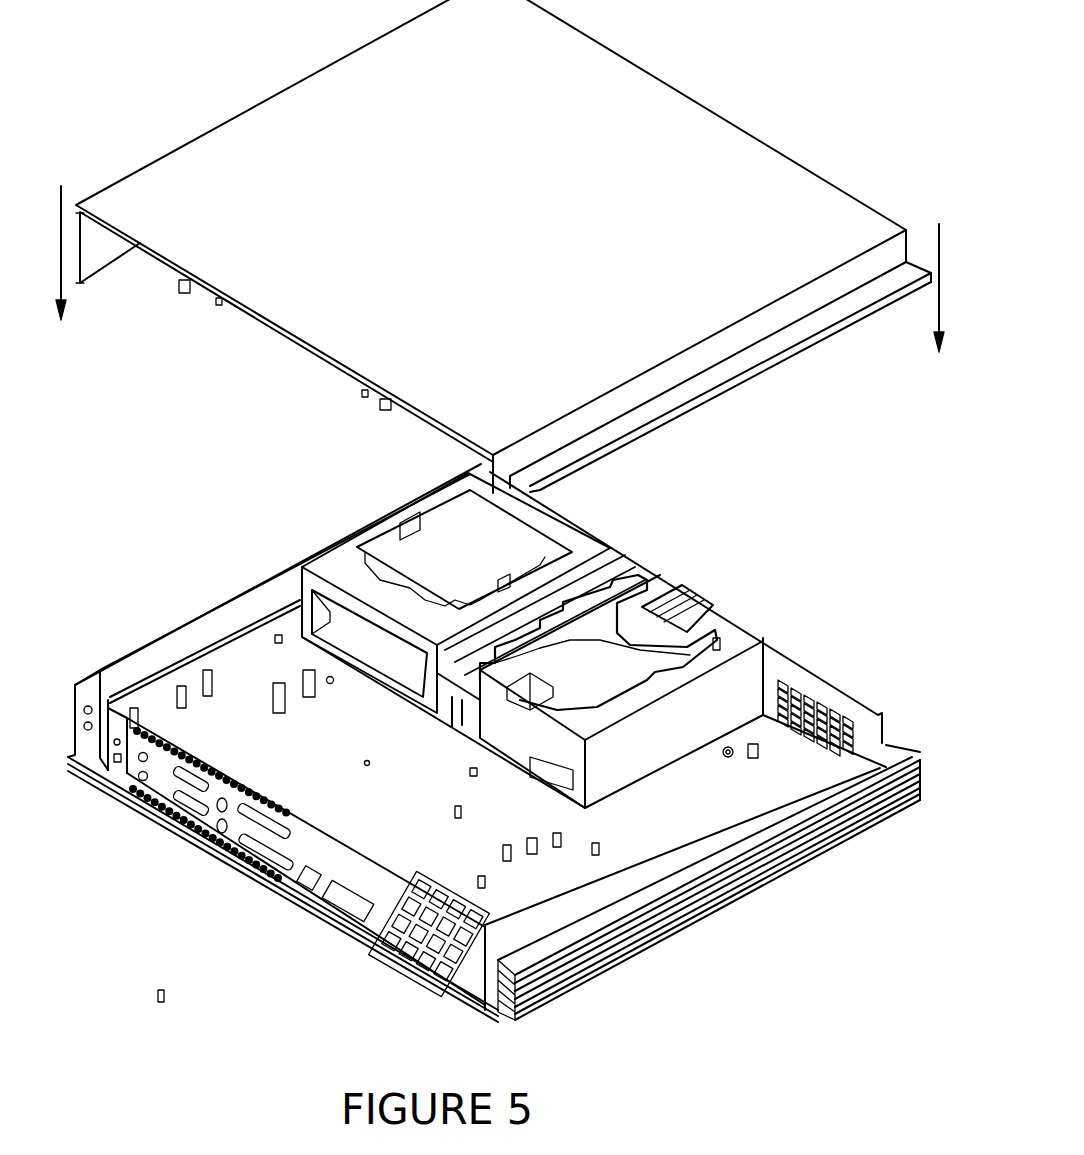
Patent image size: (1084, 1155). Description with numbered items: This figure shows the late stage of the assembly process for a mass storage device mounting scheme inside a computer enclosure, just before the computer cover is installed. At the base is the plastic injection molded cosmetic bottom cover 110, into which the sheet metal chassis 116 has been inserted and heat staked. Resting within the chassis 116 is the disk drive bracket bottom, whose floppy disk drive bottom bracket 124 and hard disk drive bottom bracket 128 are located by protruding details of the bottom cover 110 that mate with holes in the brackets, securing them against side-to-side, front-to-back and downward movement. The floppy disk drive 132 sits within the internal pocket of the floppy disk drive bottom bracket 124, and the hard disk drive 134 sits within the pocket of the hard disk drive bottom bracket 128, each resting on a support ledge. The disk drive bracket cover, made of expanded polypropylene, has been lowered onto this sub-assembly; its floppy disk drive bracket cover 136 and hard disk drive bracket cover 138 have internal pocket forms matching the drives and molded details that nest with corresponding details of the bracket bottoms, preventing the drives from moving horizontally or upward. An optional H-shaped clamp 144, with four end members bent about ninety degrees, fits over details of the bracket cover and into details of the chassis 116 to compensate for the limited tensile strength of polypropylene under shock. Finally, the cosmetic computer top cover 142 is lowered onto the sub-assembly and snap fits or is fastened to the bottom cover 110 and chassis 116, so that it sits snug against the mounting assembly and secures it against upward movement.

The bottom cover 110 is at (698, 920).
The chassis 116 is at (307, 559).
The floppy disk drive bottom bracket 124 is at (390, 672).
The hard disk drive bottom bracket 128 is at (531, 764).
The floppy disk drive 132 is at (508, 540).
The hard disk drive 134 is at (609, 600).
The floppy disk drive bracket cover 136 is at (585, 540).
The hard disk drive bracket cover 138 is at (740, 624).
The computer top cover 142 is at (348, 310).
The clamp 144 is at (682, 587).